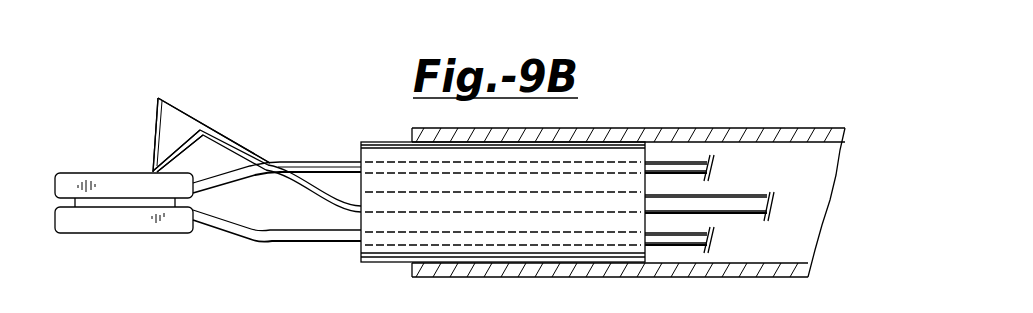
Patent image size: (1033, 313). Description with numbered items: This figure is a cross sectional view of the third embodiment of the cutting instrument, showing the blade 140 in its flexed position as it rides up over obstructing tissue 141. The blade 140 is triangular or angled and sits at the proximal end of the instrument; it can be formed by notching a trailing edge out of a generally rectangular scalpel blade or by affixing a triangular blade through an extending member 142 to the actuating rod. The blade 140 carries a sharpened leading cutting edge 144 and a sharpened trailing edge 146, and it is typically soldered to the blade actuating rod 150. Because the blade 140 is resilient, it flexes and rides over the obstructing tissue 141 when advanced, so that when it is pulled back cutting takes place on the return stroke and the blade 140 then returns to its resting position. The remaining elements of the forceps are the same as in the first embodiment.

The blade 140 is at (177, 120).
The obstructing tissue 141 is at (110, 203).
The extending member 142 is at (237, 141).
The leading cutting edge 144 is at (153, 143).
The trailing edge 146 is at (192, 145).
The blade actuating rod 150 is at (727, 195).